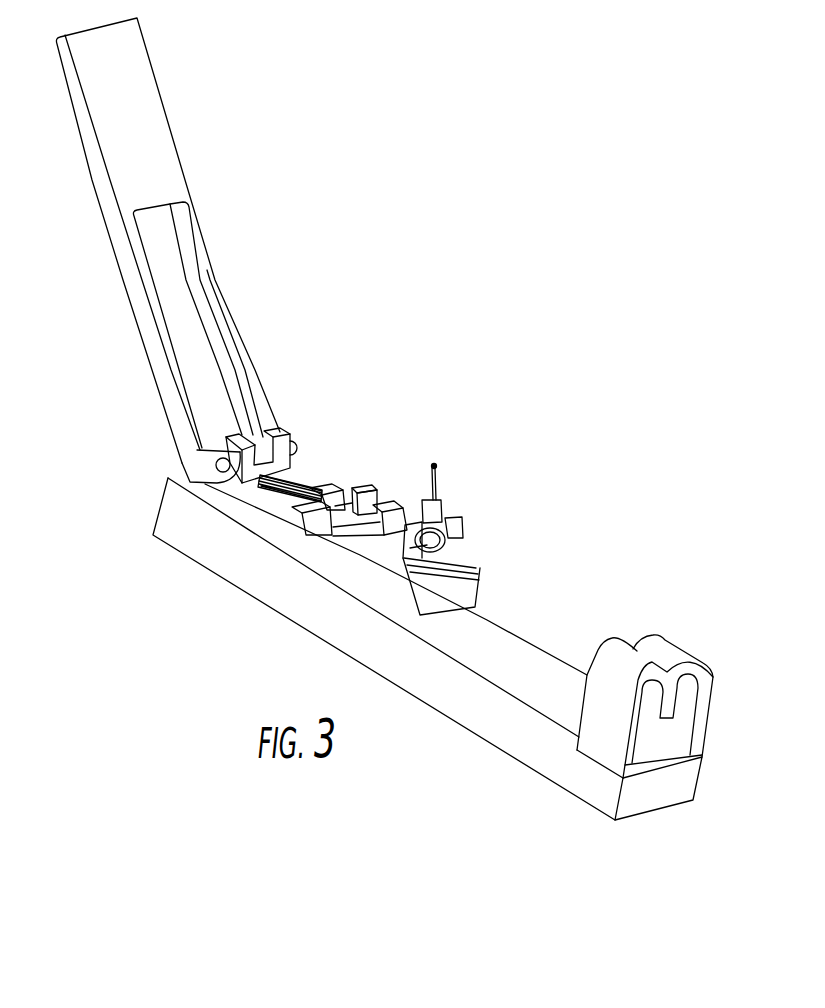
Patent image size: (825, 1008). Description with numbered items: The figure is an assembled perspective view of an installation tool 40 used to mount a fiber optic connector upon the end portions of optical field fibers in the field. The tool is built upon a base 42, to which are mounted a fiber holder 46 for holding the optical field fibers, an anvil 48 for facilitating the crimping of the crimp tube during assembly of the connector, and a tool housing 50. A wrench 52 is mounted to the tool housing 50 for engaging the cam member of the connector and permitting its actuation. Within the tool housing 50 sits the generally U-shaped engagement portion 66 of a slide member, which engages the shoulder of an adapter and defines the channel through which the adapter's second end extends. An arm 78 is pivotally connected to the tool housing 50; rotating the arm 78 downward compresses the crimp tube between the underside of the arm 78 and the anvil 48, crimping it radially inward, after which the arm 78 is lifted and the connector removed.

The installation tool 40 is at (360, 297).
The base 42 is at (503, 647).
The fiber holder 46 is at (690, 723).
The anvil 48 is at (460, 585).
The tool housing 50 is at (258, 510).
The wrench 52 is at (437, 468).
The engagement portion 66 is at (361, 460).
The arm 78 is at (153, 125).